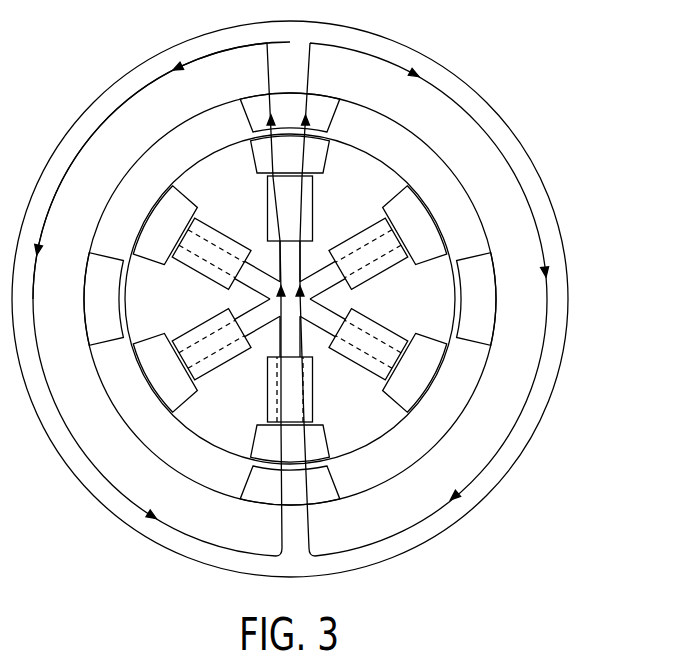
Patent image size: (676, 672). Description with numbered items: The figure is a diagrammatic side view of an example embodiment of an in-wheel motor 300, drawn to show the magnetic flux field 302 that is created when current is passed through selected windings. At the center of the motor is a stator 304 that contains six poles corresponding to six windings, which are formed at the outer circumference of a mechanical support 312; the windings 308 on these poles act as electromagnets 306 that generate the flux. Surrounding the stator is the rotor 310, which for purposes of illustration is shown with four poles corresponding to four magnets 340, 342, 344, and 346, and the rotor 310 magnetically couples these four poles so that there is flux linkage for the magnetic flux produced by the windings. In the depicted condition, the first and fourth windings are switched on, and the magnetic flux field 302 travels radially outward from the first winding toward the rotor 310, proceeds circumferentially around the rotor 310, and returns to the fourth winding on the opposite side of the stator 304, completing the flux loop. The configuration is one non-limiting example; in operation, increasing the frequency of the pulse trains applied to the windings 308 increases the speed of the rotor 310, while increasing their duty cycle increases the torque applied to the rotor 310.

The in-wheel motor 300 is at (492, 88).
The magnetic flux field 302 is at (313, 270).
The stator 304 is at (211, 420).
The electromagnets 306 is at (258, 160).
The windings 308 is at (372, 375).
The rotor 310 is at (513, 465).
The mechanical support 312 is at (527, 317).
The magnet 340 is at (487, 271).
The magnet 342 is at (102, 306).
The magnet 344 is at (282, 107).
The magnet 346 is at (263, 498).